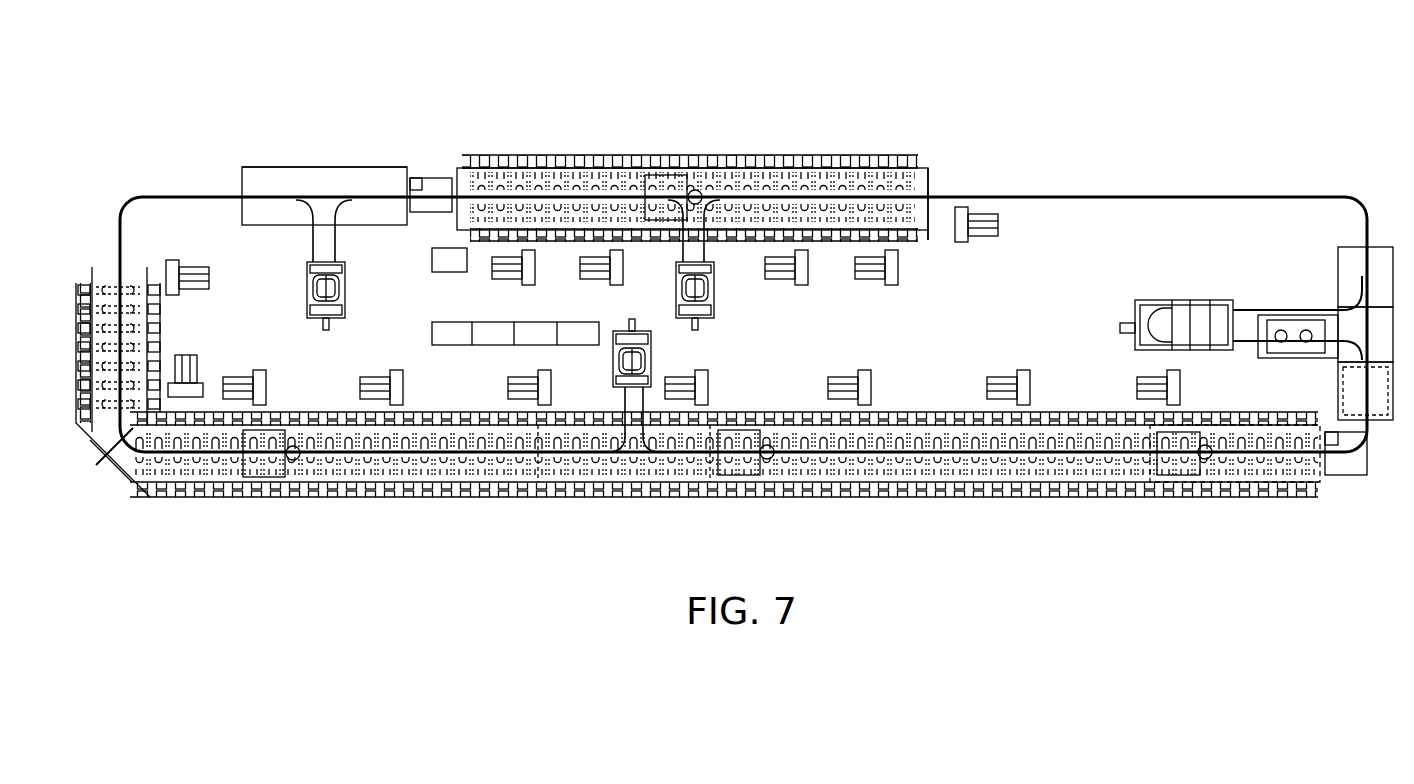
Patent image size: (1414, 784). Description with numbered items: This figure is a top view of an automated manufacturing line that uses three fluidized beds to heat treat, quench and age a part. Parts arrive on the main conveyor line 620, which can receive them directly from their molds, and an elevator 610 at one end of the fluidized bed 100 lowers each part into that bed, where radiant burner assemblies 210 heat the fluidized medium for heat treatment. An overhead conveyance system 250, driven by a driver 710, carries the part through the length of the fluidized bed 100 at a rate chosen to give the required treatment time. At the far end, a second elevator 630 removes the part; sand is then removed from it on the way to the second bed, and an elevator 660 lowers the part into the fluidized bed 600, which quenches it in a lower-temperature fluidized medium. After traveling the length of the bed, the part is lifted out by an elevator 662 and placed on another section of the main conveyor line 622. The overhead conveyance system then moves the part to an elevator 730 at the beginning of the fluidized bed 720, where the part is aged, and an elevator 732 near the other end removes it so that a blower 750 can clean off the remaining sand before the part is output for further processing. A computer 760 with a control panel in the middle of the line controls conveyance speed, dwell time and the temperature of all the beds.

The fluidized bed 100 is at (882, 176).
The radiant burner assemblies 210 is at (810, 164).
The overhead conveyance system 250 is at (1060, 197).
The fluidized bed 600 is at (339, 218).
The elevator 610 is at (915, 173).
The main conveyor line 620 is at (704, 134).
The main conveyor line section 622 is at (1382, 448).
The elevator 630 is at (500, 182).
The elevator 660 is at (372, 178).
The elevator 662 is at (290, 166).
The driver 710 is at (1133, 340).
The fluidized bed 720 is at (620, 475).
The elevator 730 is at (93, 240).
The elevator 732 is at (1302, 473).
The blower 750 is at (1347, 466).
The computer 760 is at (536, 324).